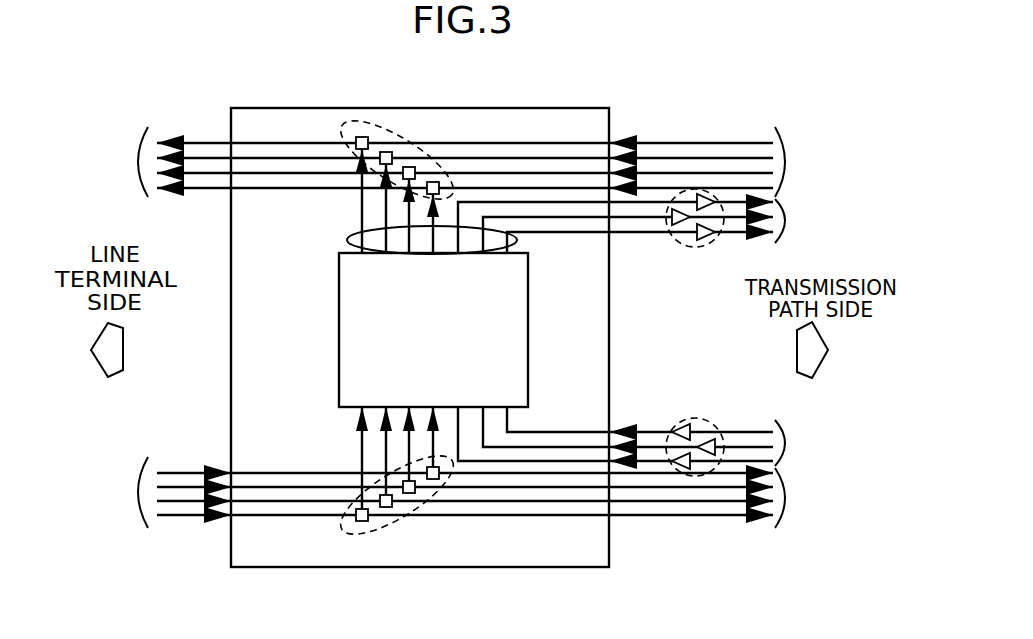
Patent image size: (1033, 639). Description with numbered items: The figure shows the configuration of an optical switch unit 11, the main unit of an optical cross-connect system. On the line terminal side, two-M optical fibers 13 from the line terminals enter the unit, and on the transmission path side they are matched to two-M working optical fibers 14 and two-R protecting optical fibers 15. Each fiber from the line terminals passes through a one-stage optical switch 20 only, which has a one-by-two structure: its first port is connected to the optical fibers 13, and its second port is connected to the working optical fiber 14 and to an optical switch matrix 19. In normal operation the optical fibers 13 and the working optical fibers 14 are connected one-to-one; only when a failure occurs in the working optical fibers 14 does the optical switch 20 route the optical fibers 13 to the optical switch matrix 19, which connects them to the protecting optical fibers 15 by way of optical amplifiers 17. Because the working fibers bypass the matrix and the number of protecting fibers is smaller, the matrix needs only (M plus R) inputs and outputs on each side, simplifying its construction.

The optical switch unit 11 is at (272, 107).
The optical fibers 13 is at (136, 162).
The working optical fibers 14 is at (788, 172).
The protecting optical fibers 15 is at (788, 226).
The optical amplifiers 17 is at (678, 246).
The optical switch matrix 19 is at (339, 375).
The one-stage optical switch 20 is at (381, 128).